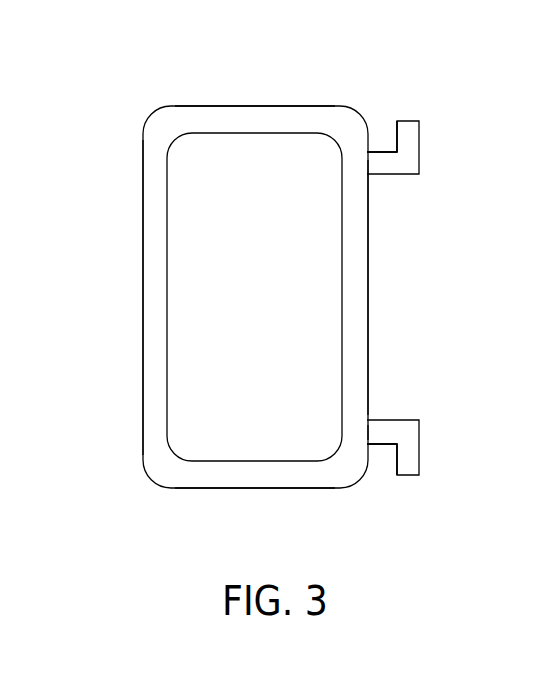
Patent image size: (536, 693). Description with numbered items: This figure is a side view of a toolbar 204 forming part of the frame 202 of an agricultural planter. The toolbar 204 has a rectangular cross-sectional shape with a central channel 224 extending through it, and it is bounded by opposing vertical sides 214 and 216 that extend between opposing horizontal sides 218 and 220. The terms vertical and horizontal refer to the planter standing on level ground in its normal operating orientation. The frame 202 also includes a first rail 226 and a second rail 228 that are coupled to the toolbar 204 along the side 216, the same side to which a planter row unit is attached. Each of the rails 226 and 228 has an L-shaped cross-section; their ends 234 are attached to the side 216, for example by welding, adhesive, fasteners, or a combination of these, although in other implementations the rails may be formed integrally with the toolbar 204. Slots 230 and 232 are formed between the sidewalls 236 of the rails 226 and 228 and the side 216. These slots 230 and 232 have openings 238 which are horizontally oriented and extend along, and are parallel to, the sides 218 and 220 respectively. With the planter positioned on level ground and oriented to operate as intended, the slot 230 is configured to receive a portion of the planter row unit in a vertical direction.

The frame 202 is at (148, 96).
The toolbar 204 is at (142, 260).
The vertical side 214 is at (142, 355).
The vertical side 216 is at (368, 298).
The horizontal side 218 is at (232, 106).
The horizontal side 220 is at (228, 488).
The central channel 224 is at (268, 304).
The first rail 226 is at (419, 167).
The second rail 228 is at (420, 433).
The slot 230 is at (382, 143).
The slot 232 is at (383, 448).
The ends of the rails 234 is at (368, 166).
The sidewalls of the rails 236 is at (387, 129).
The openings 238 is at (382, 115).